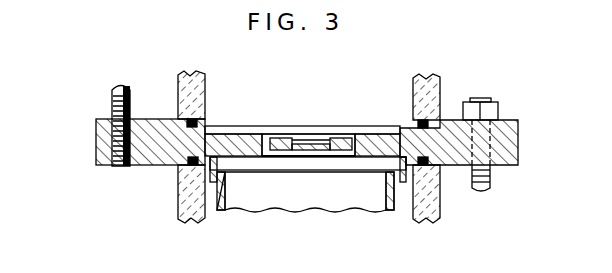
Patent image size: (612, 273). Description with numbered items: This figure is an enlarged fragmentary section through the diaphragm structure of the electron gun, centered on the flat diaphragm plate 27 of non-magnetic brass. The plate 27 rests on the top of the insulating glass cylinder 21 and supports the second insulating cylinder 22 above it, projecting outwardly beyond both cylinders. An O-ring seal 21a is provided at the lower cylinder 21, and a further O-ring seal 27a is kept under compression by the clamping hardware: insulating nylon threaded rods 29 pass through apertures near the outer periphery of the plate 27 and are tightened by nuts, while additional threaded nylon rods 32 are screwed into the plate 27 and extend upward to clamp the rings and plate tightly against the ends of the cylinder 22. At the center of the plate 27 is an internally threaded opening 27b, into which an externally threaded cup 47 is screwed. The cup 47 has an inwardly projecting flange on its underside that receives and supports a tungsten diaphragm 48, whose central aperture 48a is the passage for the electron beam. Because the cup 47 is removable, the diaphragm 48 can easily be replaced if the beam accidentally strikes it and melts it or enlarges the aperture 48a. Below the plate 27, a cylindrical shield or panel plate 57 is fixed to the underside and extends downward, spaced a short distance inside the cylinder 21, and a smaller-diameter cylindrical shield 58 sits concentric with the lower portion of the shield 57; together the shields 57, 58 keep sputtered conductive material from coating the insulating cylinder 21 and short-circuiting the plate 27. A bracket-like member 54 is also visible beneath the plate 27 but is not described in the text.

The cylinder 21 is at (180, 200).
The O-ring seal 21a is at (178, 170).
The cylinder 22 is at (183, 72).
The diaphragm plate 27 is at (101, 167).
The O-ring seal 27a is at (190, 121).
The internally threaded opening 27b is at (357, 160).
The threaded rod 29 is at (490, 185).
The threaded nylon rod 32 is at (112, 102).
The externally threaded cup 47 is at (338, 137).
The diaphragm 48 is at (297, 140).
The aperture 48a is at (313, 157).
The bracket 54 is at (240, 163).
The shield or panel plate 57 is at (403, 183).
The shield or panel plate 58 is at (390, 190).